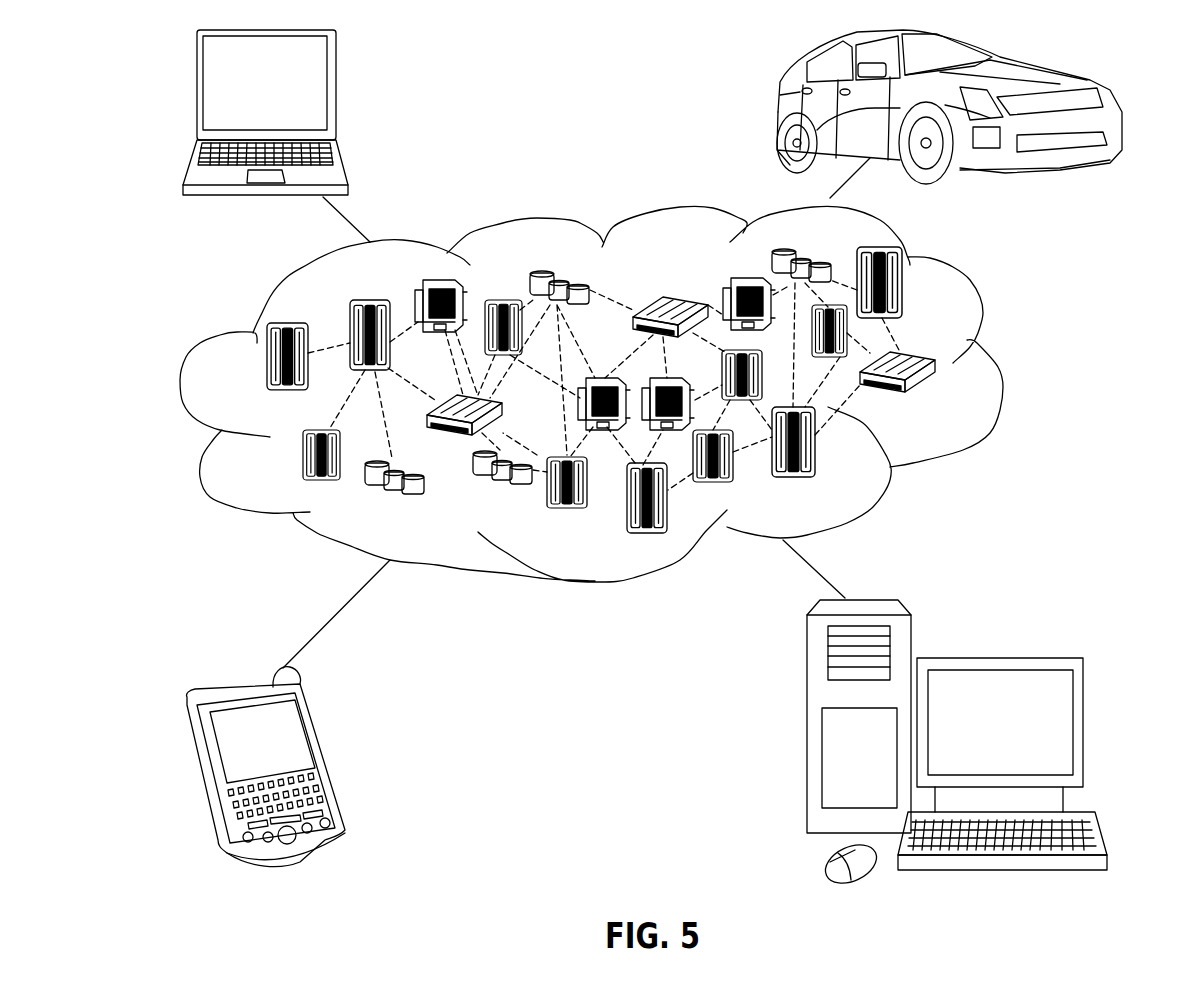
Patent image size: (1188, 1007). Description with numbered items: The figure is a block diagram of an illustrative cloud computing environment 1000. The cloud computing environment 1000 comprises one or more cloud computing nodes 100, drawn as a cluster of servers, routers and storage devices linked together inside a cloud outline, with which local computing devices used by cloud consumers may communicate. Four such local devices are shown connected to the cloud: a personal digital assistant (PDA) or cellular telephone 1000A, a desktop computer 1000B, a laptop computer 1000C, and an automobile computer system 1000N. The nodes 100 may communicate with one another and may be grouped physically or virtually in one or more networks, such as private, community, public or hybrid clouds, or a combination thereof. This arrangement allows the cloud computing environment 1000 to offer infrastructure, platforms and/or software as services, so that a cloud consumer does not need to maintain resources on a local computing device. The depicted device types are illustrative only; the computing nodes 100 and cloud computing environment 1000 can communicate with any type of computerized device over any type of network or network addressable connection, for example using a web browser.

The laptop computer 1000C is at (337, 92).
The automobile computer system 1000N is at (776, 109).
The cloud computing environment 1000 is at (630, 394).
The cloud computing nodes 100 is at (942, 398).
The personal digital assistant (PDA) or cellular telephone 1000A is at (327, 753).
The desktop computer 1000B is at (997, 657).